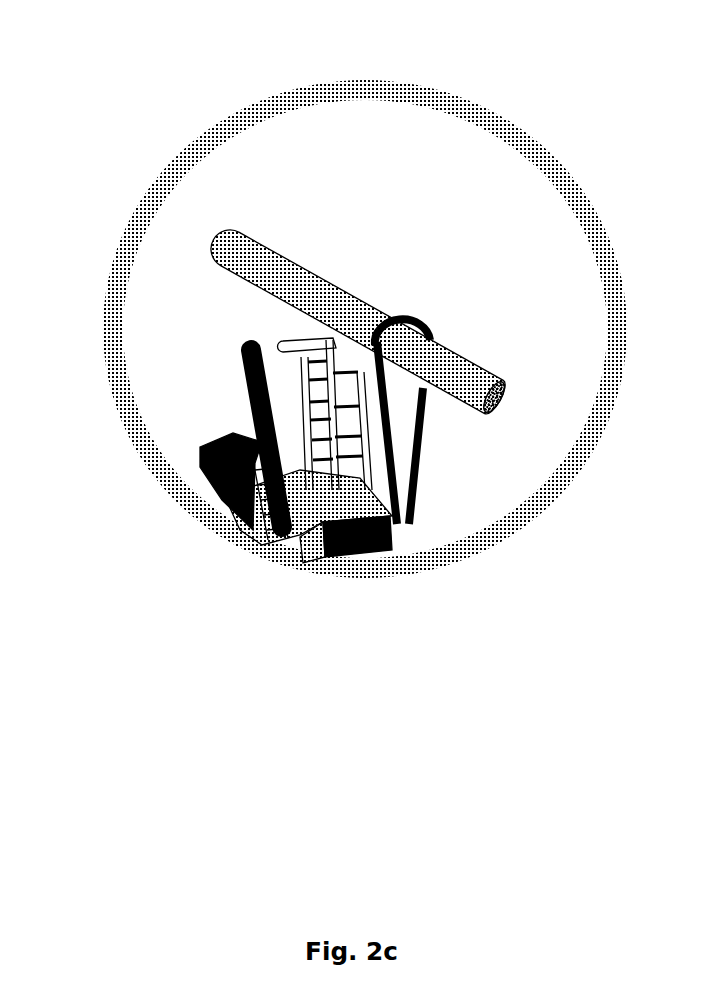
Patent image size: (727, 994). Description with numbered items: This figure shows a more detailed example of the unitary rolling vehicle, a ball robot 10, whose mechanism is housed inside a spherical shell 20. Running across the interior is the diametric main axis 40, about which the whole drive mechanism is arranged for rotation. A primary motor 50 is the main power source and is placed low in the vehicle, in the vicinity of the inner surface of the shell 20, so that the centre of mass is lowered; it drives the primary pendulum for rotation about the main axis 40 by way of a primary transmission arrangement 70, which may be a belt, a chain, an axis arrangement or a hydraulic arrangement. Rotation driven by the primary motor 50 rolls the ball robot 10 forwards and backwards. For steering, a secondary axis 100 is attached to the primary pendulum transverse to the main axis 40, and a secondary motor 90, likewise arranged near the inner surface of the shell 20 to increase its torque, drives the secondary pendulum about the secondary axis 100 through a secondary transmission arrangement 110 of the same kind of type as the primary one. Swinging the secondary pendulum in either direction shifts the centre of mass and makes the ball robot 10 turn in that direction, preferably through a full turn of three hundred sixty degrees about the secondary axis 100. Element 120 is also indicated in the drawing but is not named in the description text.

The ball robot 10 is at (94, 94).
The shell 20 is at (520, 129).
The diametric main axis 40 is at (292, 254).
The primary motor 50 is at (370, 473).
The primary transmission arrangement 70 is at (430, 436).
The secondary motor 90 is at (305, 486).
The secondary axis 100 is at (289, 340).
The secondary transmission arrangement 110 is at (240, 395).
The housing block 120 is at (384, 555).